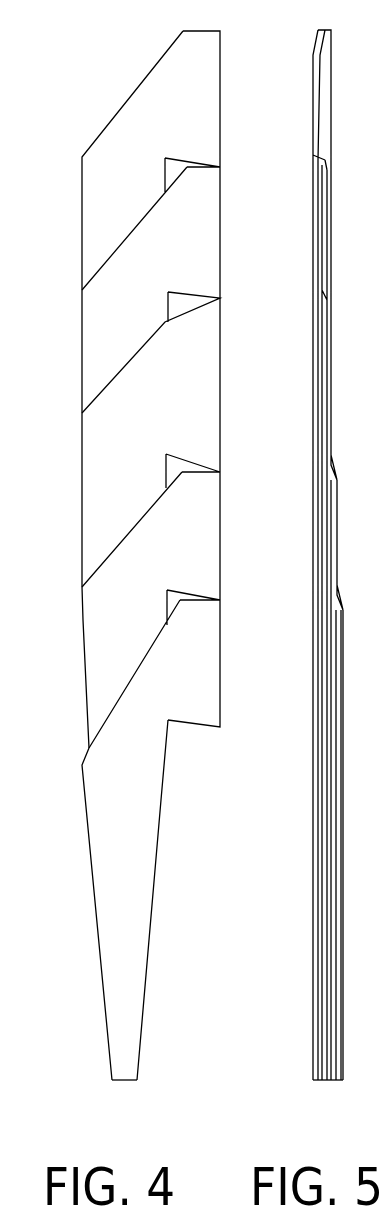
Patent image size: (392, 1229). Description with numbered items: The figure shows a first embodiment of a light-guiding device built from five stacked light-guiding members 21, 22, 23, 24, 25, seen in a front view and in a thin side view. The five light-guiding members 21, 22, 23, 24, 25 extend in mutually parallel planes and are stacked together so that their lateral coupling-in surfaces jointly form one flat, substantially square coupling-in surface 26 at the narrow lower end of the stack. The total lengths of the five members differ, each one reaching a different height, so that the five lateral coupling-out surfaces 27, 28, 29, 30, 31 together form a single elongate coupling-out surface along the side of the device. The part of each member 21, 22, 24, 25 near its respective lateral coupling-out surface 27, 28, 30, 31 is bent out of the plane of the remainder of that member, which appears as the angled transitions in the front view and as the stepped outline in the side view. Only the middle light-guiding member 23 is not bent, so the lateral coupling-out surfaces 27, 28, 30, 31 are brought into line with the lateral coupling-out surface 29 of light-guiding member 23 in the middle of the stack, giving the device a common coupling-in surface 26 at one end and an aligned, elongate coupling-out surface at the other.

In FIG. 4, the light-guiding member 21 is at (98, 824).
In FIG. 5, the light-guiding member 21 is at (343, 830).
In FIG. 4, the light-guiding member 22 is at (95, 644).
In FIG. 5, the light-guiding member 22 is at (338, 560).
In FIG. 4, the light-guiding member 23 is at (95, 474).
In FIG. 5, the light-guiding member 23 is at (330, 402).
In FIG. 4, the light-guiding member 24 is at (95, 350).
In FIG. 5, the light-guiding member 24 is at (328, 265).
In FIG. 4, the light-guiding member 25 is at (95, 202).
In FIG. 5, the light-guiding member 25 is at (323, 72).
In FIG. 4, the coupling-in surface 26 is at (126, 1080).
In FIG. 5, the coupling-in surface 26 is at (326, 1080).
In FIG. 4, the lateral coupling-out surface 27 is at (220, 658).
In FIG. 4, the lateral coupling-out surface 28 is at (220, 534).
In FIG. 4, the lateral coupling-out surface 29 is at (220, 383).
In FIG. 4, the lateral coupling-out surface 30 is at (220, 213).
In FIG. 4, the lateral coupling-out surface 31 is at (220, 118).